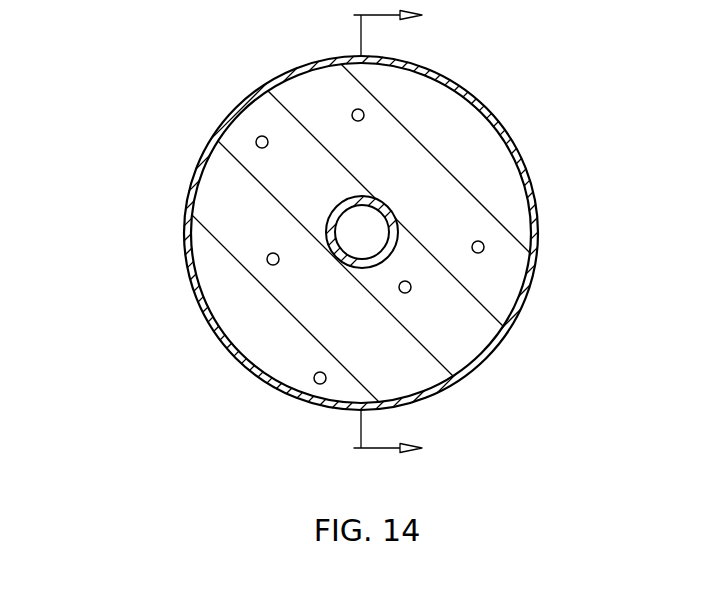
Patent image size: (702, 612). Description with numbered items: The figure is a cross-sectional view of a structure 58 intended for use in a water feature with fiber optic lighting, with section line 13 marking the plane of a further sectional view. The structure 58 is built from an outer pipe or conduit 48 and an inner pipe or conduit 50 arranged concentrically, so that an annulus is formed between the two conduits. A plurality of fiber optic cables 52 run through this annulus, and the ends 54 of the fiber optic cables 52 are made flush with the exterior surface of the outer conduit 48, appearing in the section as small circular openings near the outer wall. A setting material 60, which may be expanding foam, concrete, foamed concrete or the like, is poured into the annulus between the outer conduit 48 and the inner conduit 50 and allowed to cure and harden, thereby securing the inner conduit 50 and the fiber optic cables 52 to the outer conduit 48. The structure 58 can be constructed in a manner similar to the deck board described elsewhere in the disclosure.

The section line 13- 13 is at (408, 234).
The outer pipe or conduit 48 is at (222, 343).
The inner pipe or conduit 50 is at (388, 257).
The fiber optic cables 52 is at (256, 137).
The ends of the fiber optic cables 54 is at (185, 226).
The structure 58 is at (412, 237).
The setting material 60 is at (442, 115).